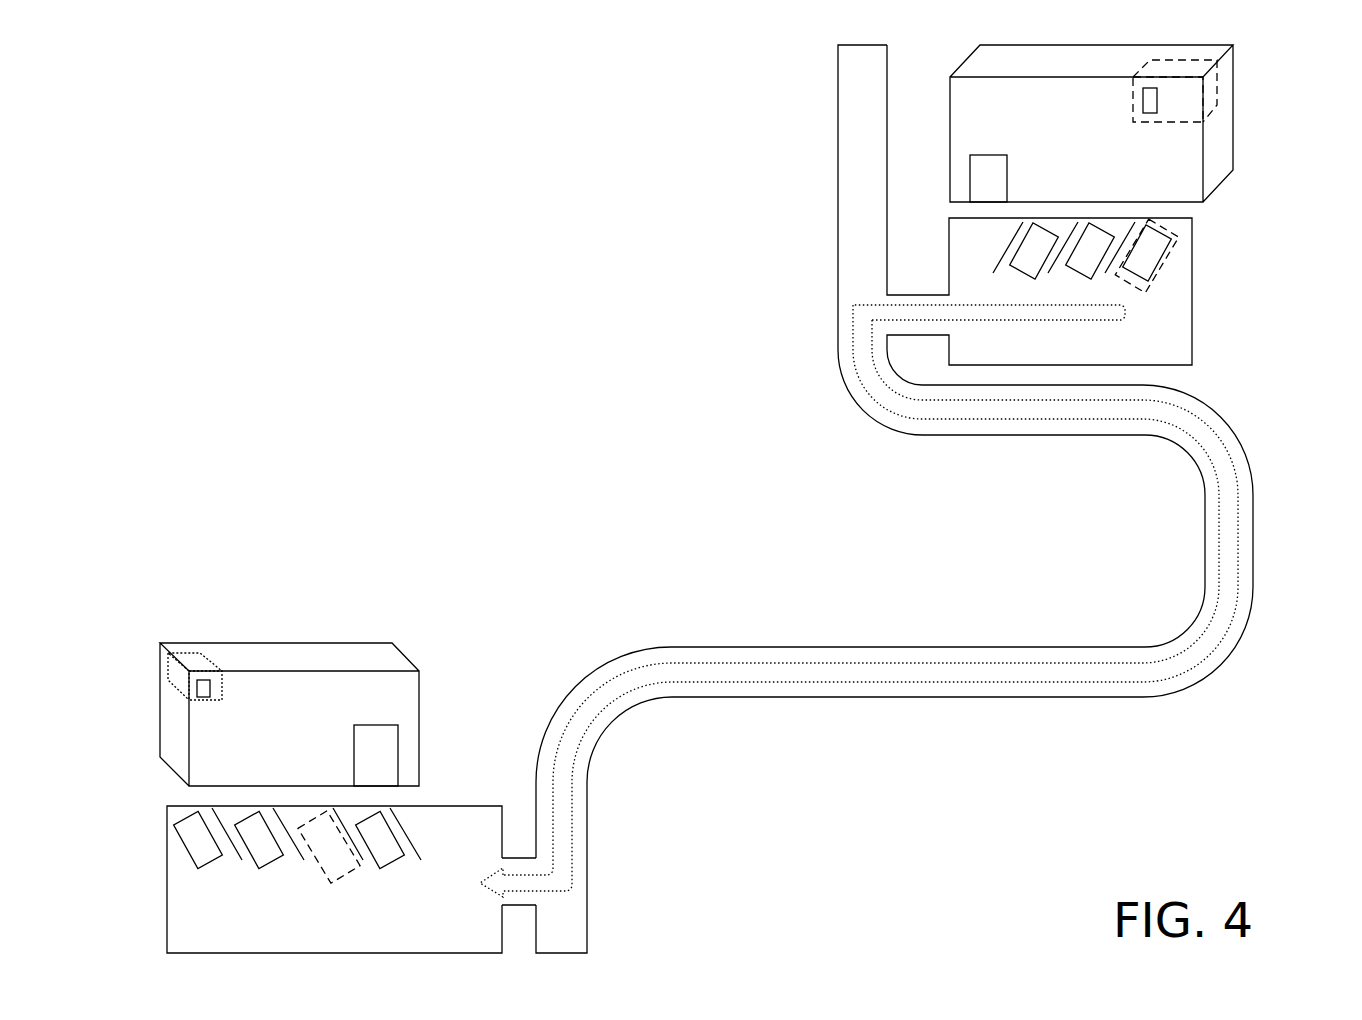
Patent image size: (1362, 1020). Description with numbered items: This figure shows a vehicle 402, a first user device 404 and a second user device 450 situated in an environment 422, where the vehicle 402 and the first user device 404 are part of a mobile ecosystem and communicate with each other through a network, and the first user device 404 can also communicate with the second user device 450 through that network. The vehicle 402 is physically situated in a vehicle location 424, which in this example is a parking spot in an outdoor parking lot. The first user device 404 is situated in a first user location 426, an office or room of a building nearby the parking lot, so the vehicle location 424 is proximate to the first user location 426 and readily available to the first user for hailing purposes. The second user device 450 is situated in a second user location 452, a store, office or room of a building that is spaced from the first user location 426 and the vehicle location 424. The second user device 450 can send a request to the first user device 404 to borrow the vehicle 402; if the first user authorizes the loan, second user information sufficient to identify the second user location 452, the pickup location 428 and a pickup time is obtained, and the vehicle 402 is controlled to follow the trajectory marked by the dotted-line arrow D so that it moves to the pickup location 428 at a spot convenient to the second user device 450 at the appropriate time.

The vehicle 402 is at (1158, 265).
The first user device 404 is at (1142, 98).
The environment 422 is at (596, 385).
The vehicle location 424 is at (1150, 293).
The first user location 426 is at (1217, 82).
The pickup location 428 is at (335, 880).
The second user device 450 is at (197, 687).
The second user location 452 is at (203, 655).
The arrow D is at (1007, 683).